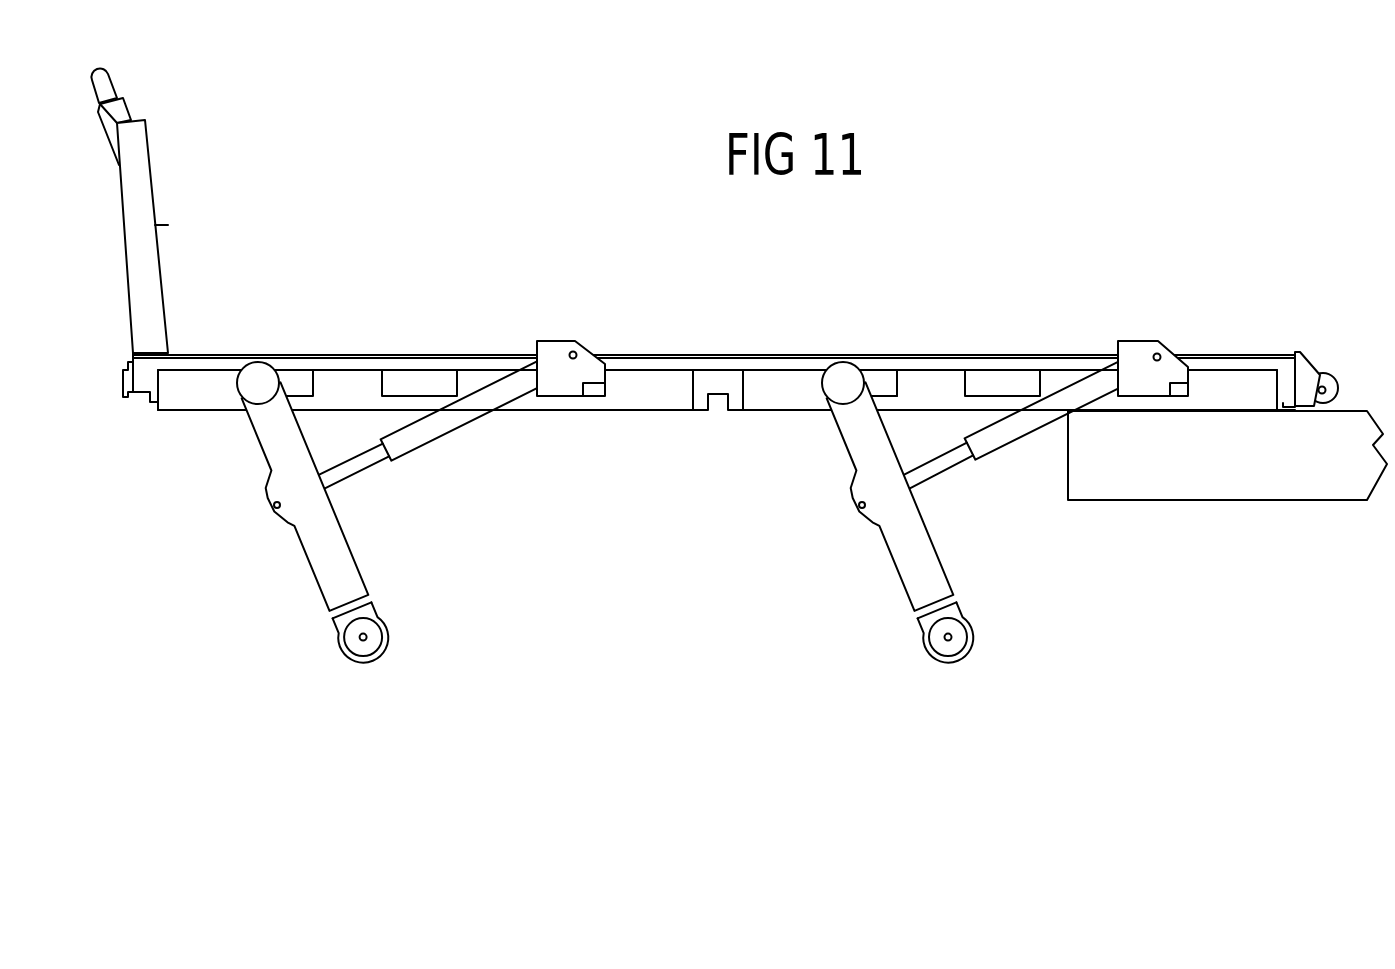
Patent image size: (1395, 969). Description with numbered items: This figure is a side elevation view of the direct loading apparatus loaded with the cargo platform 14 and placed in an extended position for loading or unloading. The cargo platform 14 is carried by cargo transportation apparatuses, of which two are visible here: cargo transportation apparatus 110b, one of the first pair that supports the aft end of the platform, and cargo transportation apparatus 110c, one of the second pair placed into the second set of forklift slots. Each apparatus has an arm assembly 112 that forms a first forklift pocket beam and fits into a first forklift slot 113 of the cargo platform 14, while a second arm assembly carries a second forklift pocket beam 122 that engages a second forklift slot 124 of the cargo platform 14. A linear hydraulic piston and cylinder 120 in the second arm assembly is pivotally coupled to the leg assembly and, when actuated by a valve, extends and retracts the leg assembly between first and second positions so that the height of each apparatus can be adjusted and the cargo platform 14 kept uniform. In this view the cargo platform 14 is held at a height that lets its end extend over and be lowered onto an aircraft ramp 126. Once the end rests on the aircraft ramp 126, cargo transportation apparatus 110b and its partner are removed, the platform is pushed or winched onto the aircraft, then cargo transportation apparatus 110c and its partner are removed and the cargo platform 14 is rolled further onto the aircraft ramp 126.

The cargo platform 14 is at (255, 280).
The arm assembly 112 is at (297, 380).
The first forklift slot 113 is at (897, 385).
The linear hydraulic piston and cylinder 120 is at (417, 435).
The second forklift pocket beam 122 is at (587, 355).
The second forklift slot 124 is at (583, 383).
The aircraft ramp 126 is at (1228, 511).
The cargo transportation apparatus 110c is at (410, 668).
The cargo transportation apparatus 110b is at (995, 668).